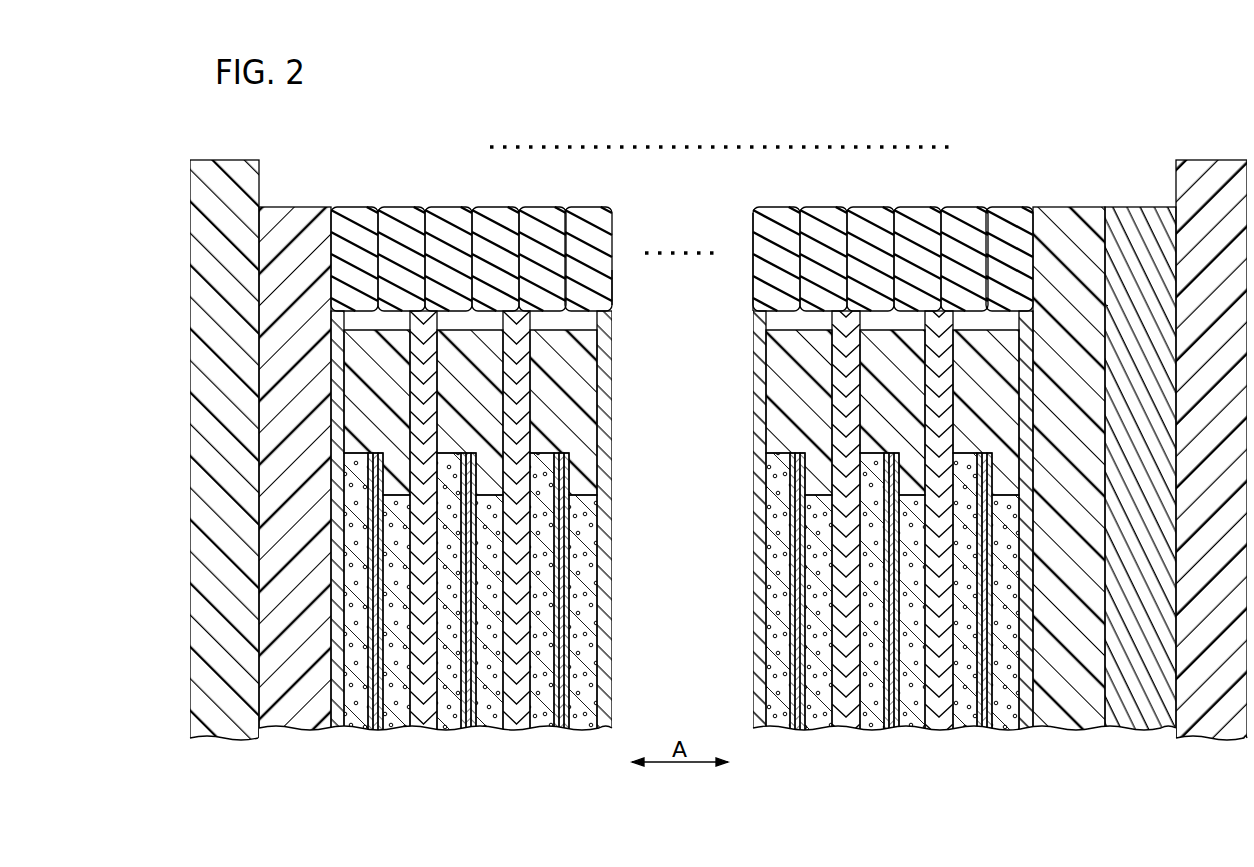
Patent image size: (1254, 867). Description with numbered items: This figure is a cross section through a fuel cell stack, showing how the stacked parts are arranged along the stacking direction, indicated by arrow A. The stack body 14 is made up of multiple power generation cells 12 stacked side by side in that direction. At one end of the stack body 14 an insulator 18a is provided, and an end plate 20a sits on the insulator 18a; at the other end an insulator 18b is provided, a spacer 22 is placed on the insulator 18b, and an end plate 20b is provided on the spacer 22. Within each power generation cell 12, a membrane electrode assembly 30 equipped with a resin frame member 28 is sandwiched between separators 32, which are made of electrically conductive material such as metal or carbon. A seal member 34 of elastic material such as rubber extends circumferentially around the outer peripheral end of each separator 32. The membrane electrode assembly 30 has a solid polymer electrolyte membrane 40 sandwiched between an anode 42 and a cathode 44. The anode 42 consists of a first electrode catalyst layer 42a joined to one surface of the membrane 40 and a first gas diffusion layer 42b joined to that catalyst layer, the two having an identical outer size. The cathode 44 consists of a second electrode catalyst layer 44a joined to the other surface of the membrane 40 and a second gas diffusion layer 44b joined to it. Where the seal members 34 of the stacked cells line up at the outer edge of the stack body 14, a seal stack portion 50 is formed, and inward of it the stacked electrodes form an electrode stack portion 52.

The power generation cell 12 is at (378, 196).
The stack body 14 is at (997, 127).
The insulator 18a is at (284, 207).
The insulator 18b is at (1056, 207).
The end plate 20a is at (237, 160).
The end plate 20b is at (1211, 160).
The spacer 22 is at (1124, 207).
The resin frame member 28 is at (786, 393).
The membrane electrode assembly 30 is at (681, 604).
The separator 32 is at (760, 463).
The seal member 34 is at (757, 227).
The solid polymer electrolyte membrane 40 is at (802, 595).
The anode 42 is at (663, 603).
The first electrode catalyst layer 42a is at (793, 557).
The first gas diffusion layer 42b is at (772, 533).
The cathode 44 is at (698, 604).
The second electrode catalyst layer 44a is at (808, 604).
The second gas diffusion layer 44b is at (820, 655).
The seal stack portion 50 is at (620, 288).
The electrode stack portion 52 is at (624, 516).